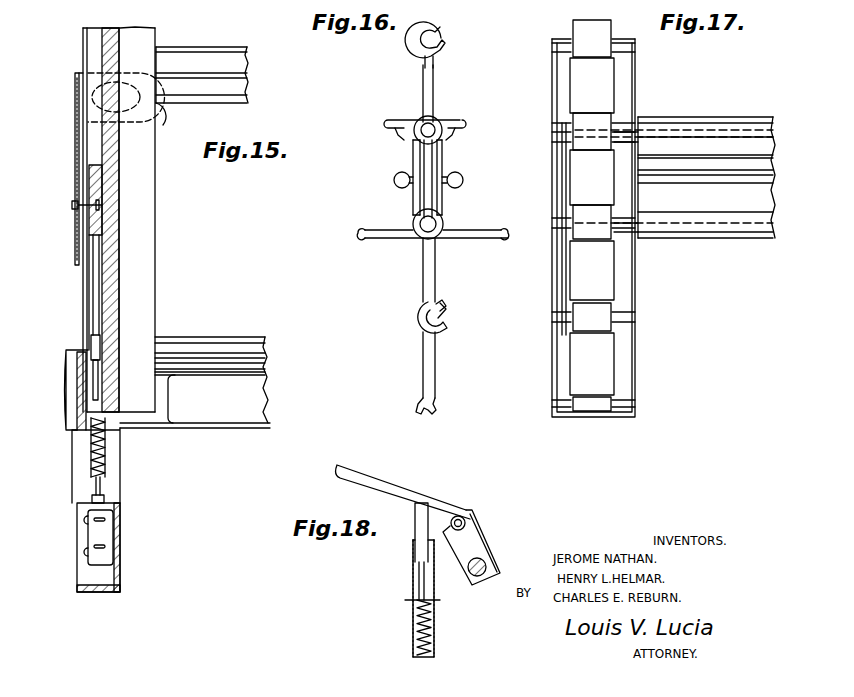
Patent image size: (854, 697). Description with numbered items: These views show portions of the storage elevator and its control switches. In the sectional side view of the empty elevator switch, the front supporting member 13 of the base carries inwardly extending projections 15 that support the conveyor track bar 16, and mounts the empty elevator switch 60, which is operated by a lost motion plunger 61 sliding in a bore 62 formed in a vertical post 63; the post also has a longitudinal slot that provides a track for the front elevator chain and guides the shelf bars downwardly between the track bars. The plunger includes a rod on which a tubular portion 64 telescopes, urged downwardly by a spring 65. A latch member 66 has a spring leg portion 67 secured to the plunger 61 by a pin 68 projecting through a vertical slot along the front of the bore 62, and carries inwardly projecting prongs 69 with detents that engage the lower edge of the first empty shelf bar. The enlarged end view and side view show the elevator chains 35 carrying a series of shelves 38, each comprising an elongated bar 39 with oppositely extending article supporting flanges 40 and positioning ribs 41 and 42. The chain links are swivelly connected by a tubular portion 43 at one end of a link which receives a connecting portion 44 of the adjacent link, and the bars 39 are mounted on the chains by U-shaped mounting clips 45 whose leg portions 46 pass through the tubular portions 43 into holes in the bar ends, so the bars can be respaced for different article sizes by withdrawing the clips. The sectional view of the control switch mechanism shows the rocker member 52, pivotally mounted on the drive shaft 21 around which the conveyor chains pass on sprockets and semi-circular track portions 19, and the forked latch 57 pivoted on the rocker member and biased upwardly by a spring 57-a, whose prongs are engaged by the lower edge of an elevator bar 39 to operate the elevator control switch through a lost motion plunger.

In FIG. 15, the front supporting member 13 is at (75, 427).
In FIG. 15, the projections 15 is at (170, 392).
In FIG. 15, the track bar 16 is at (262, 388).
In FIG. 18, the semi-circular track portions 19 is at (450, 620).
In FIG. 18, the drive shaft 21 is at (471, 576).
In FIG. 16, the elevator chains 35 is at (422, 88).
In FIG. 17, the elevator chains 35 is at (628, 82).
In FIG. 15, the shelves 38 is at (195, 48).
In FIG. 17, the shelves 38 is at (726, 115).
In FIG. 16, the elongated bar 39 is at (443, 157).
In FIG. 17, the elongated bar 39 is at (733, 208).
In FIG. 16, the article supporting flanges 40 is at (360, 228).
In FIG. 17, the article supporting flanges 40 is at (702, 240).
In FIG. 16, the positioning ribs 41 is at (394, 178).
In FIG. 16, the positioning ribs 42 is at (388, 124).
In FIG. 16, the tubular portion 43 is at (418, 52).
In FIG. 16, the connecting portion 44 is at (447, 310).
In FIG. 16, the U-shaped mounting clip 45 is at (422, 192).
In FIG. 17, the U-shaped mounting clip 45 is at (562, 189).
In FIG. 17, the leg portions 46 is at (620, 128).
In FIG. 18, the rocker member 52 is at (482, 538).
In FIG. 18, the forked latch 57 is at (425, 502).
In FIG. 18, the spring 57-a is at (466, 520).
In FIG. 15, the empty elevator switch 60 is at (90, 537).
In FIG. 15, the lost motion plunger 61 is at (90, 278).
In FIG. 15, the bore 62 is at (88, 53).
In FIG. 15, the vertical post 63 is at (120, 190).
In FIG. 15, the tubular portion 64 is at (106, 464).
In FIG. 15, the spring 65 is at (90, 458).
In FIG. 15, the latch member 66 is at (72, 101).
In FIG. 15, the spring leg portion 67 is at (75, 149).
In FIG. 15, the pin 68 is at (72, 205).
In FIG. 15, the prongs 69 is at (160, 118).